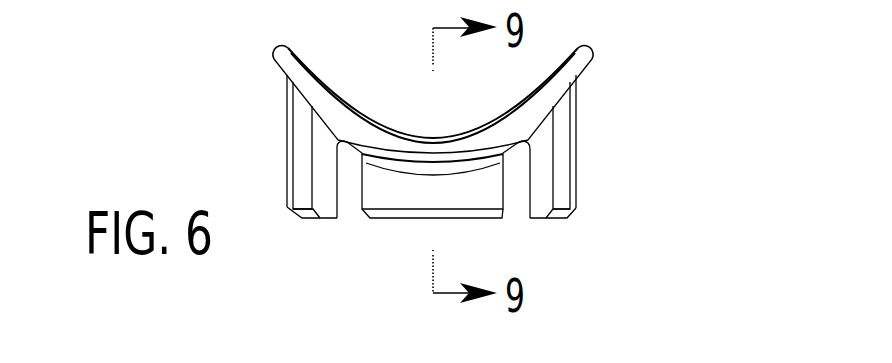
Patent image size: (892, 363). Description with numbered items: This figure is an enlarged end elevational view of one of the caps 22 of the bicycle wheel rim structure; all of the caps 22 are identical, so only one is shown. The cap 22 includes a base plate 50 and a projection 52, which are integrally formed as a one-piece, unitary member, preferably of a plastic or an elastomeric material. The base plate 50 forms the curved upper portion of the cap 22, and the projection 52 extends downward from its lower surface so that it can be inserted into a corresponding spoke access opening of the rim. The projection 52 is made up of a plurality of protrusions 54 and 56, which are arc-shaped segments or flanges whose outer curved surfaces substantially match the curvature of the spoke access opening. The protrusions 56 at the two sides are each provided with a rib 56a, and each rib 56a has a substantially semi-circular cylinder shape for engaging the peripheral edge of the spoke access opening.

The cap 22 is at (636, 72).
The base plate 50 is at (426, 132).
The projection 52 is at (590, 143).
The protrusion 54 is at (397, 219).
The protrusion 56 is at (310, 219).
The rib 56a is at (287, 152).